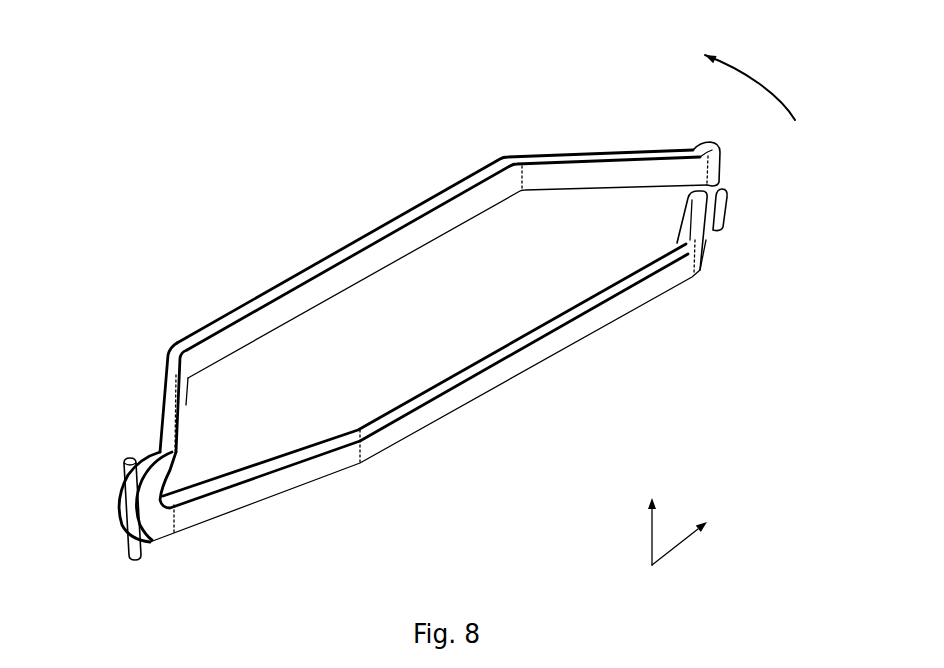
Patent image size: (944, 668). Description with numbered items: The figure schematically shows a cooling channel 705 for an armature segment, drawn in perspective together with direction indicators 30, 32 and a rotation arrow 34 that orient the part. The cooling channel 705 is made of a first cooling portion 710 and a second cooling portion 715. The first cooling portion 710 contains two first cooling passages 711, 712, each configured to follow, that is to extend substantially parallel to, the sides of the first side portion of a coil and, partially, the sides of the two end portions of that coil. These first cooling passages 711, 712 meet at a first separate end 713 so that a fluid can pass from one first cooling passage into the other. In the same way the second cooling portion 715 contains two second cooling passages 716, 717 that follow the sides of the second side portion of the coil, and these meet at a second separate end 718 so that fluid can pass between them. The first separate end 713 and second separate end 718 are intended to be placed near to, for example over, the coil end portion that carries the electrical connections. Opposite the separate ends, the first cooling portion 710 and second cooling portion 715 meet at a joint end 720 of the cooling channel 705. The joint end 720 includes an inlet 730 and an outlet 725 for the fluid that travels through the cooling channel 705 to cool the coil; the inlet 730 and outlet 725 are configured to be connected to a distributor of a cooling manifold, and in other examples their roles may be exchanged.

The cooling channel 705 is at (448, 333).
The first cooling portion 710 is at (428, 391).
The first cooling passage 711 is at (585, 325).
The first cooling passage 712 is at (522, 332).
The first separate end 713 is at (737, 218).
The second cooling portion 715 is at (448, 214).
The second cooling passage 716 is at (336, 255).
The second cooling passage 717 is at (362, 268).
The second separate end 718 is at (700, 142).
The joint end 720 is at (148, 548).
The outlet 725 is at (89, 497).
The inlet 730 is at (118, 463).
The rotation direction 34 is at (752, 87).
The vertical direction 30 is at (633, 531).
The lateral direction 32 is at (693, 545).